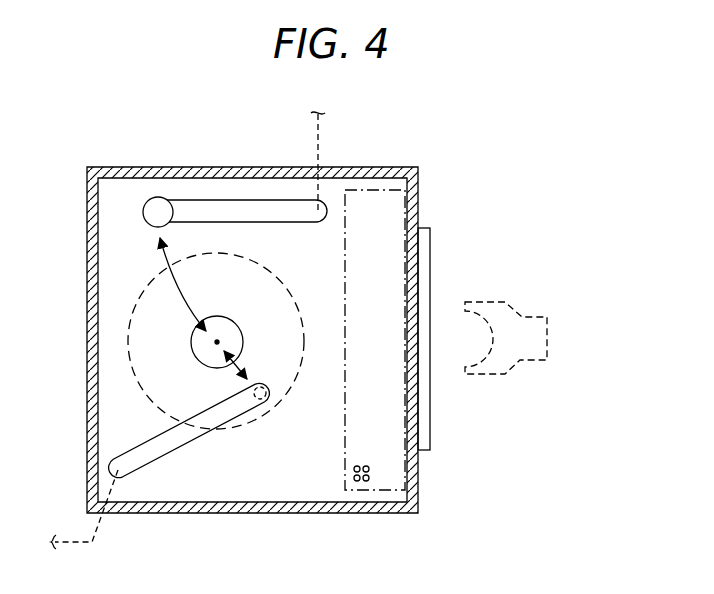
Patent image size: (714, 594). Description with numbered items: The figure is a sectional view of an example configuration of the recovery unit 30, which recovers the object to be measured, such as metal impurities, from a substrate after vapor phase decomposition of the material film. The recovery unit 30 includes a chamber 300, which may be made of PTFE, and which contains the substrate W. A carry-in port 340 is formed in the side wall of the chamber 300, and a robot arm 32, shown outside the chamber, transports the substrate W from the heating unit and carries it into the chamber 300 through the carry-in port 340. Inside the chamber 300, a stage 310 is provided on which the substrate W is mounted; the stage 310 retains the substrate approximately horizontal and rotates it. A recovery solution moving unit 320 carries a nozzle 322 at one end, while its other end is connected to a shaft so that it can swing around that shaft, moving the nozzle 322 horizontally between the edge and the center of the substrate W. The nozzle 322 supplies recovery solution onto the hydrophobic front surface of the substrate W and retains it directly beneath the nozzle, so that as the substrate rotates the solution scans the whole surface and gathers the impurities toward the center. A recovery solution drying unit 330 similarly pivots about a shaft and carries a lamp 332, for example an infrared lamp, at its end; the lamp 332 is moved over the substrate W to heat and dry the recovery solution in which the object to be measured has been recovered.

The recovery unit 30 is at (470, 180).
The robot arm 32 is at (547, 338).
The chamber 300 is at (418, 488).
The stage 310 is at (191, 355).
The recovery solution moving unit 320 is at (163, 452).
The nozzle 322 is at (262, 402).
The recovery solution drying unit 330 is at (236, 200).
The lamp 332 is at (158, 197).
The carry-in port 340 is at (430, 262).
The substrate W is at (128, 345).